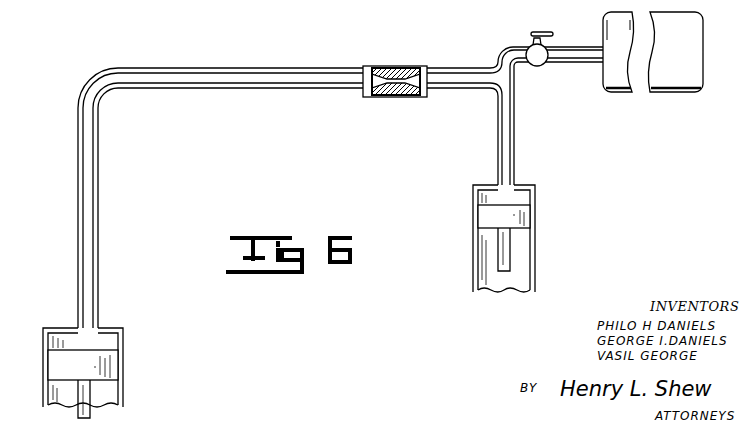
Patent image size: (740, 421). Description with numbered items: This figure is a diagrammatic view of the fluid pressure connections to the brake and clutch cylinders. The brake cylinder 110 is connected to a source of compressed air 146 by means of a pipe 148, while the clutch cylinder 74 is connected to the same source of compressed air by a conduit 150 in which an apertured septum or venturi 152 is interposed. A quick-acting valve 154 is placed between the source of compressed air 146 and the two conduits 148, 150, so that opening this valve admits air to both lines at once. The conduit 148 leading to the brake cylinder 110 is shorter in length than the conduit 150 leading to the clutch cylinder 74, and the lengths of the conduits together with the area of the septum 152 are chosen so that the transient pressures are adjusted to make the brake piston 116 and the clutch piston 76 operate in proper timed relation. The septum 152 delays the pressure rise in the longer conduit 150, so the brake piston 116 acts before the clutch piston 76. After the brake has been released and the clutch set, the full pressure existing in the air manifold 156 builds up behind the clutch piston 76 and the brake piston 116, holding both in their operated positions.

The clutch cylinder 74 is at (125, 393).
The clutch piston 76 is at (125, 363).
The brake cylinder 110 is at (535, 258).
The brake piston 116 is at (532, 218).
The source of compressed air 146 is at (677, 80).
The pipe 148 is at (513, 146).
The conduit 150 is at (312, 91).
The apertured septum 152 is at (400, 98).
The quick-acting valve 154 is at (538, 66).
The air manifold 156 is at (562, 48).